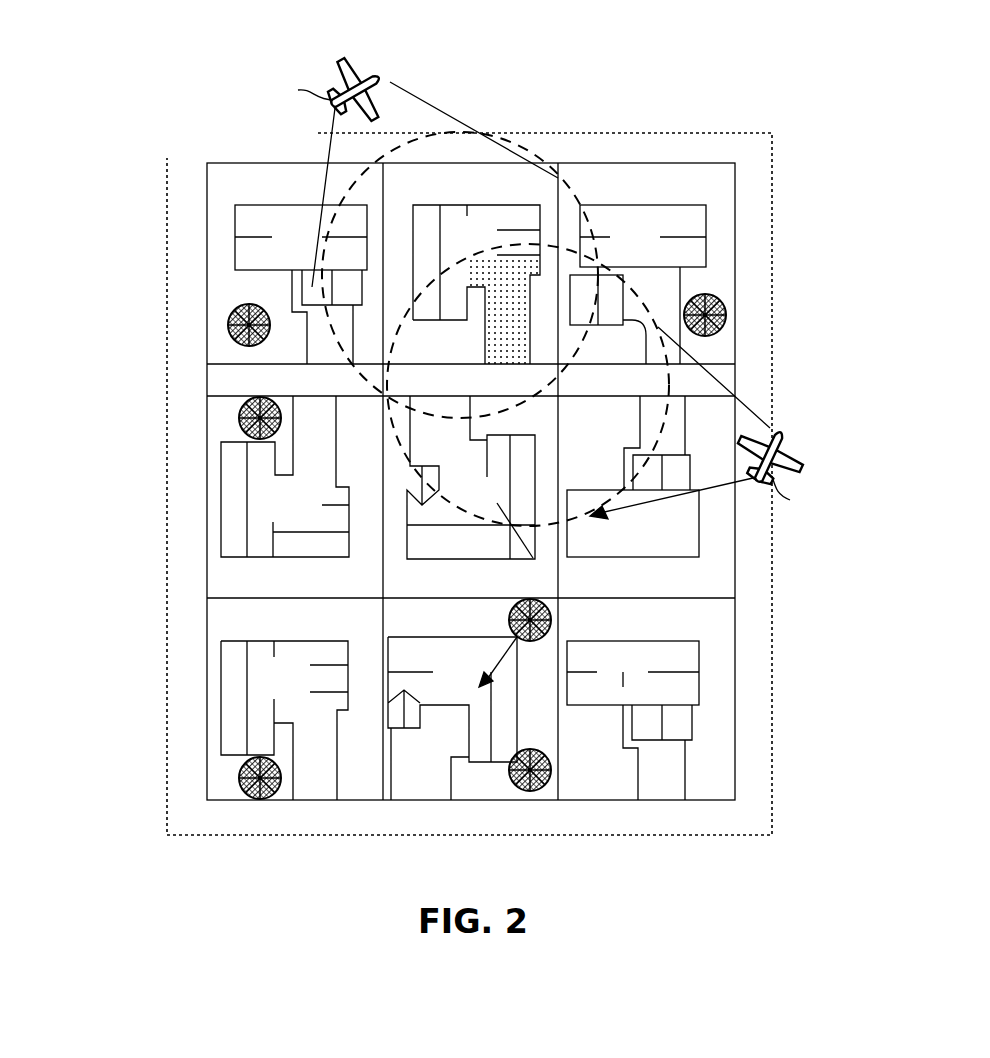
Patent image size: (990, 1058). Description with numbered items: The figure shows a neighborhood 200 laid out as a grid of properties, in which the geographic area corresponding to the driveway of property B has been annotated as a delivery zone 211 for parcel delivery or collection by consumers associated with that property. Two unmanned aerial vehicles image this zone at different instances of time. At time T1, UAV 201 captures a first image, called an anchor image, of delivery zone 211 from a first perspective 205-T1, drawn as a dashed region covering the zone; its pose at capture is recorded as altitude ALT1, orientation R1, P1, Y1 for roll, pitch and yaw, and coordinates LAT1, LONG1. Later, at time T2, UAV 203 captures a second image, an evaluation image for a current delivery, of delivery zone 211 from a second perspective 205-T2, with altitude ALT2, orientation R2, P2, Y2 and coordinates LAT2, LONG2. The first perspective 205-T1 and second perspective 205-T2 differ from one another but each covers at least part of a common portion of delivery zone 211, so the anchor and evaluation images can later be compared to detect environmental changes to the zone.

The neighborhood 200 is at (735, 115).
The UAV 201 is at (330, 48).
The UAV 203 is at (822, 471).
The first perspective 205-T1 is at (568, 190).
The second perspective 205-T2 is at (566, 527).
The delivery zone 211 is at (495, 362).